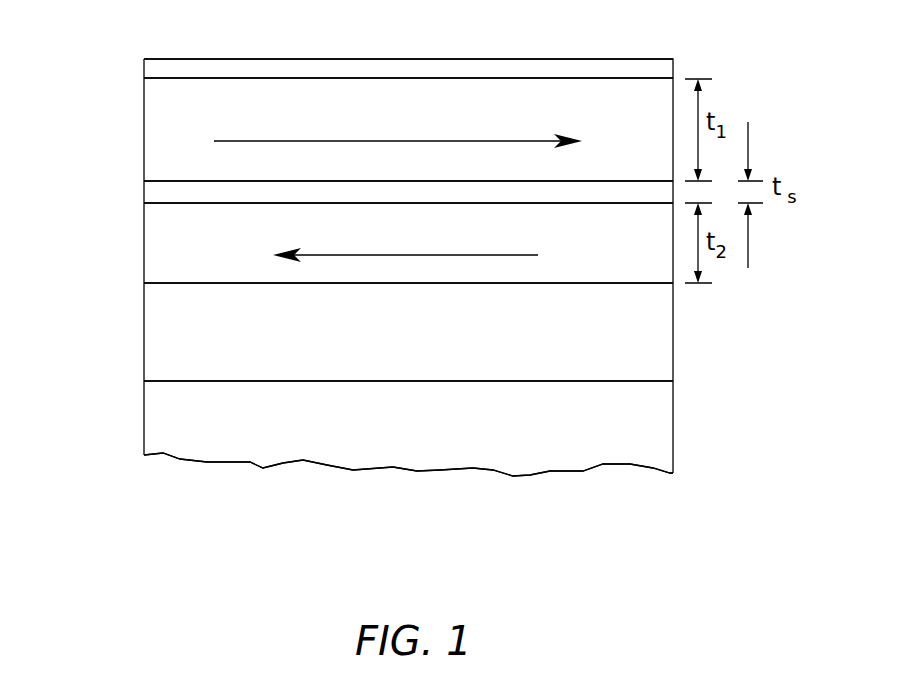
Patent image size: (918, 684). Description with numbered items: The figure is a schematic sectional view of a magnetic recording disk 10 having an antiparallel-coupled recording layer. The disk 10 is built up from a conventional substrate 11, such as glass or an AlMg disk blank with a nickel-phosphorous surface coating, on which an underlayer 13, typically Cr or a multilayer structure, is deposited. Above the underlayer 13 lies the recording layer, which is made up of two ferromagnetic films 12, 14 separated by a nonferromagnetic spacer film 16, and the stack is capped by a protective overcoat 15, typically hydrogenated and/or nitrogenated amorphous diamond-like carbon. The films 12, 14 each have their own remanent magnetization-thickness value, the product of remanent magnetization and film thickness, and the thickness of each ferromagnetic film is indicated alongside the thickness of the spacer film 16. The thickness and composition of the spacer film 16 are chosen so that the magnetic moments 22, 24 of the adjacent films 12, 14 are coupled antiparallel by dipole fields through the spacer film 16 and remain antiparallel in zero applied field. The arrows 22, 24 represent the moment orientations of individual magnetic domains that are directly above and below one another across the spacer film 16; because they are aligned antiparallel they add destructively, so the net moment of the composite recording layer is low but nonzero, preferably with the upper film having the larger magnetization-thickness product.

The disk 10 is at (796, 92).
The substrate 11 is at (170, 403).
The ferromagnetic film 12 is at (170, 131).
The underlayer 13 is at (170, 333).
The ferromagnetic film 14 is at (170, 262).
The protective overcoat 15 is at (648, 70).
The nonferromagnetic spacer film 16 is at (170, 190).
The magnetic moment 22 is at (425, 137).
The magnetic moment 24 is at (427, 255).